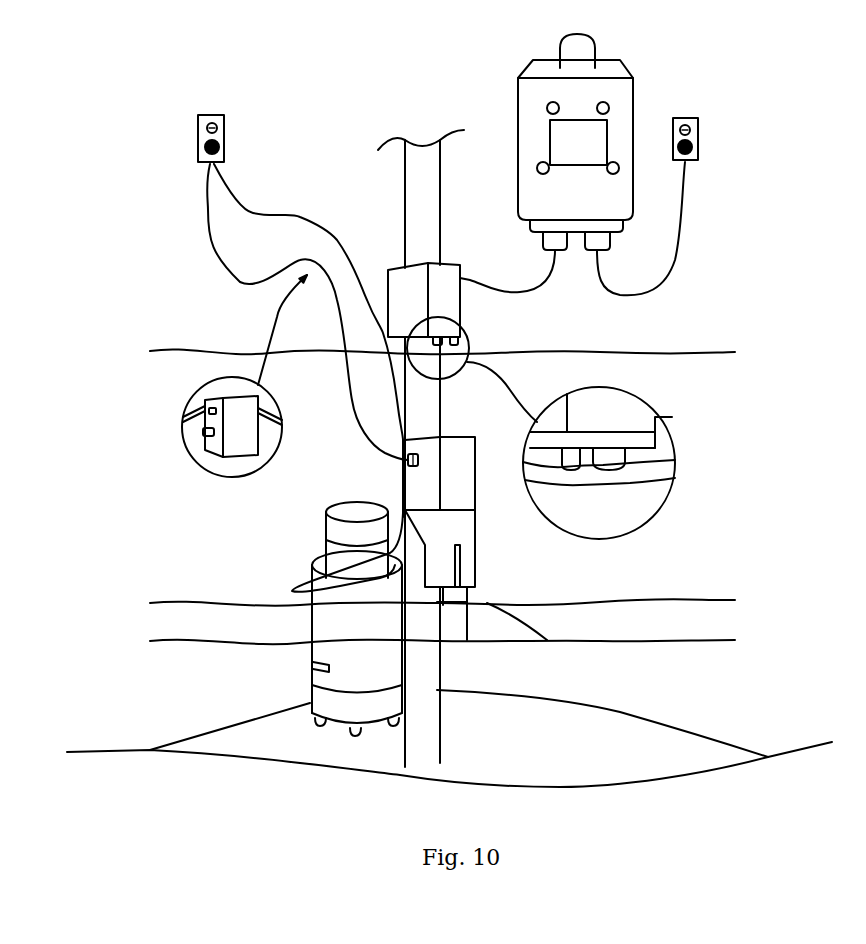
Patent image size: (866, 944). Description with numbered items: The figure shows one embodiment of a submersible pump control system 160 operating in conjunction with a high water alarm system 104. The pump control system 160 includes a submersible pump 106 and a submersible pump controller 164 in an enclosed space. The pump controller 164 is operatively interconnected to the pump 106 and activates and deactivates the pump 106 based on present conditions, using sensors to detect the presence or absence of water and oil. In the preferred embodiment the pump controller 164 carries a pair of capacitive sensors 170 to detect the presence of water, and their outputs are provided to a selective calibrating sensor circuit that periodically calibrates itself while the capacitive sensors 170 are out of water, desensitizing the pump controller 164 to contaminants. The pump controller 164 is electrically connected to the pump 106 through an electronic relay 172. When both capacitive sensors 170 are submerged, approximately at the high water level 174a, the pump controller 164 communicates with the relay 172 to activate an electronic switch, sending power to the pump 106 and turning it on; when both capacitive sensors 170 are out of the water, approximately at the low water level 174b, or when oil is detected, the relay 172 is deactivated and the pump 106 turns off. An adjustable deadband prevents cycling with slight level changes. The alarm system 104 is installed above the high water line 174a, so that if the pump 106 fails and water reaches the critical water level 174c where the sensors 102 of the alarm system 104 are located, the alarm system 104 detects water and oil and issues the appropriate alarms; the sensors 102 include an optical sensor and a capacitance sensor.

The sensors 102 is at (462, 312).
The high water alarm system 104 is at (507, 117).
The submersible pump 106 is at (312, 670).
The submersible pump control system 160 is at (732, 532).
The submersible pump controller 164 is at (470, 548).
The capacitive sensors 170 is at (452, 603).
The electronic relay 172 is at (182, 428).
The high water level 174a is at (150, 603).
The low water level 174b is at (150, 641).
The critical water level 174c is at (153, 350).